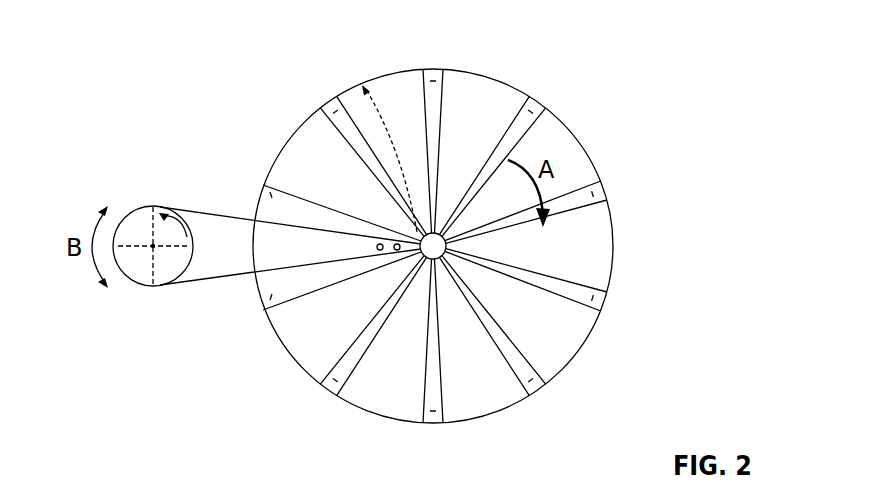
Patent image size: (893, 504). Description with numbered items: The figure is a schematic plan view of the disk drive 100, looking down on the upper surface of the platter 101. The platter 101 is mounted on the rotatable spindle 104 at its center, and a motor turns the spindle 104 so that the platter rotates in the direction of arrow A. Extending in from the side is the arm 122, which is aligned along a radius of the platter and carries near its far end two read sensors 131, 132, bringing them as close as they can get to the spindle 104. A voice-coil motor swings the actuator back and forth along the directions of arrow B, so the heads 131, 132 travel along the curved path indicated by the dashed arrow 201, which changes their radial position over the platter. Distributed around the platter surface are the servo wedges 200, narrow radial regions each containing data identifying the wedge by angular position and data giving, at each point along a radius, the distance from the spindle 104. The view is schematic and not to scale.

The disk drive 100 is at (178, 29).
The platter 101 is at (373, 79).
The rotatable spindle 104 is at (433, 233).
The arm 122 is at (186, 208).
The sensor 131 is at (397, 251).
The sensor 132 is at (380, 251).
The servo wedge 200 is at (433, 79).
The dashed arrow 201 is at (397, 143).